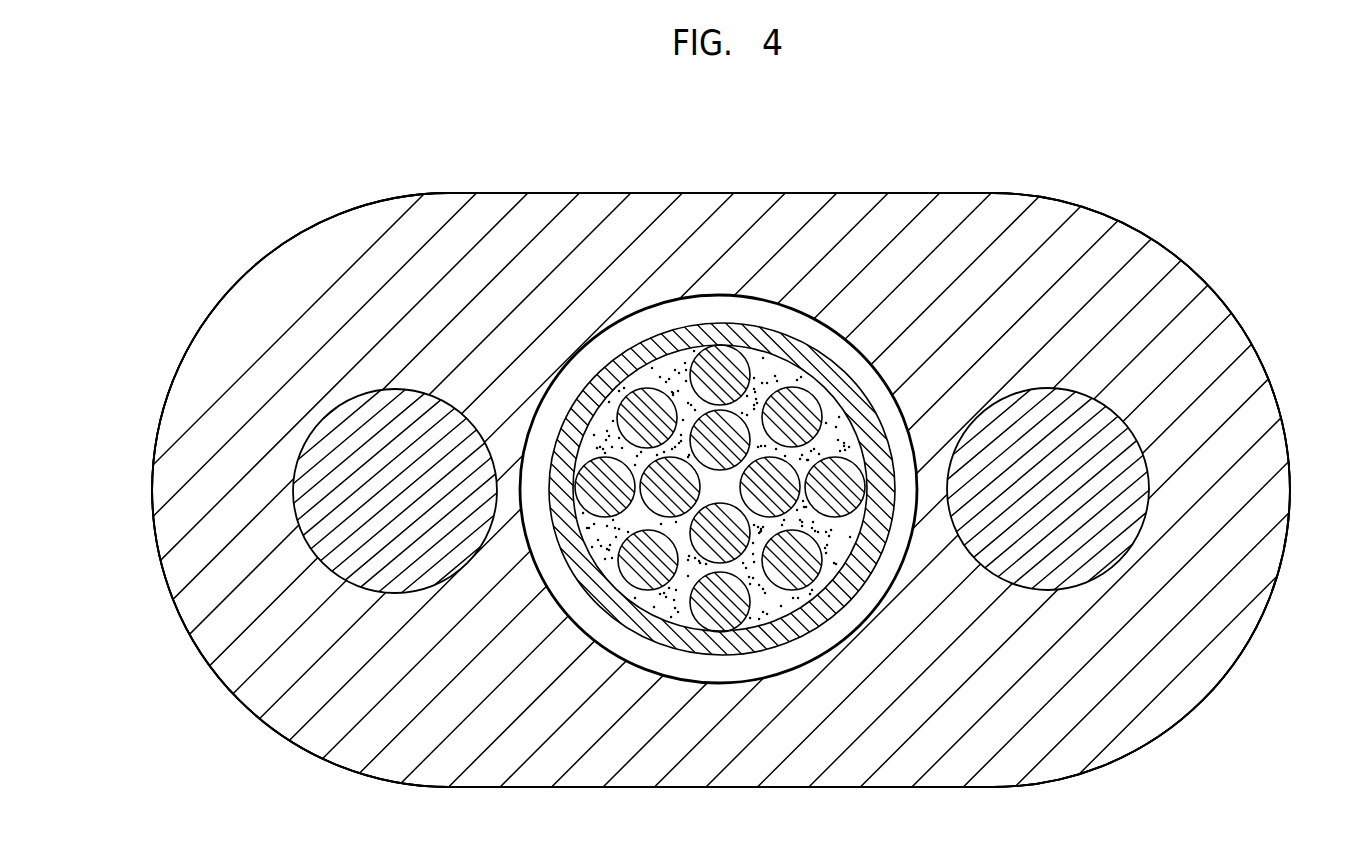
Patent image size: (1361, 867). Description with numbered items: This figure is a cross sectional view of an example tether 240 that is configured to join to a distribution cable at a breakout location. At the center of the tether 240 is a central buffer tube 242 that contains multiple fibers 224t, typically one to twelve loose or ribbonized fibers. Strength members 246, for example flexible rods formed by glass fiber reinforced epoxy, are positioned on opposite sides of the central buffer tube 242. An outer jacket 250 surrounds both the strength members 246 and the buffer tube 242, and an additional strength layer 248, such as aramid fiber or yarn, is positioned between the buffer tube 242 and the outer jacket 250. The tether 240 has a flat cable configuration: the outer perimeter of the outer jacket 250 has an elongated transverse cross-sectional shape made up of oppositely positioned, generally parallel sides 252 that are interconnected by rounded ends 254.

The tether 240 is at (1222, 208).
The central buffer tube 242 is at (697, 643).
The strength members 246 is at (348, 558).
The strength layer 248 is at (733, 312).
The outer jacket 250 is at (1063, 712).
The generally parallel sides 252 is at (600, 193).
The rounded ends 254 is at (153, 535).
The fibers 224t is at (800, 403).